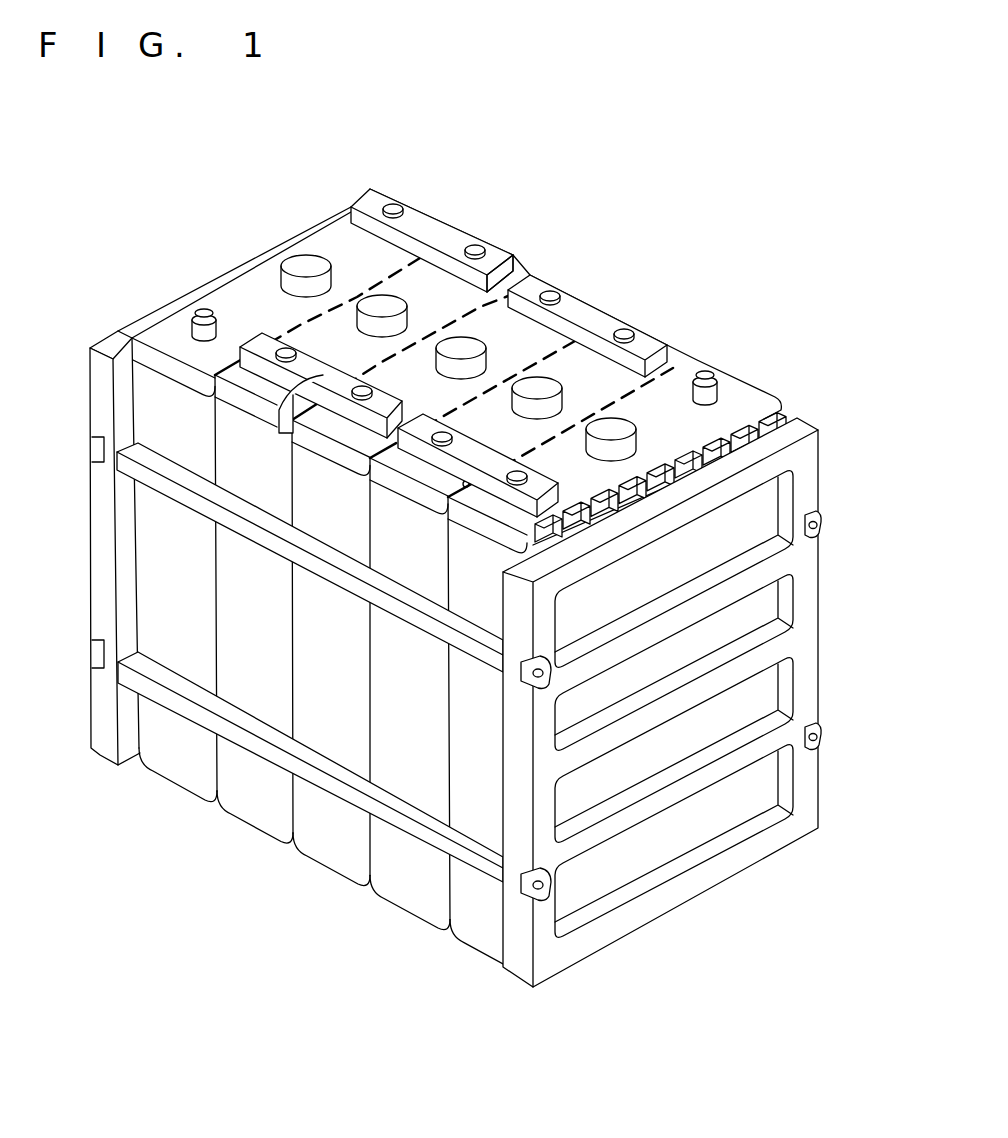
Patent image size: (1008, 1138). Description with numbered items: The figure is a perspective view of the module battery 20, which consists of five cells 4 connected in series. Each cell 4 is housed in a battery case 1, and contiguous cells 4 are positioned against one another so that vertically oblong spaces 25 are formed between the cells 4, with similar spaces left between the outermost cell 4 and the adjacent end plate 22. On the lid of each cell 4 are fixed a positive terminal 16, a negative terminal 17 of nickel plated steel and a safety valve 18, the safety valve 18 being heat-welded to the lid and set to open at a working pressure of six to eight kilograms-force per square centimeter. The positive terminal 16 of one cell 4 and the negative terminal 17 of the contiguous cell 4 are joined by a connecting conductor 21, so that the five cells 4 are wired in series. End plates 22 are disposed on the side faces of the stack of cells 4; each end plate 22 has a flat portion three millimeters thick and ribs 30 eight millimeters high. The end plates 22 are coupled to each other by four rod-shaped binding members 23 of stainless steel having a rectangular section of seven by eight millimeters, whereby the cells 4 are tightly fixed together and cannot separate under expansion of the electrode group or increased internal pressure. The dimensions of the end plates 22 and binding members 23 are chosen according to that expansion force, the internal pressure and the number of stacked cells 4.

The battery case 1 is at (178, 765).
The cell 4 is at (257, 288).
The positive terminal 16 is at (200, 312).
The negative terminal 17 is at (705, 377).
The safety valve 18 is at (410, 282).
The module battery 20 is at (523, 240).
The connecting conductor 21 is at (597, 323).
The end plate 22 is at (115, 348).
The binding member 23 is at (167, 485).
The space 25 is at (367, 288).
The rib 30 is at (698, 778).